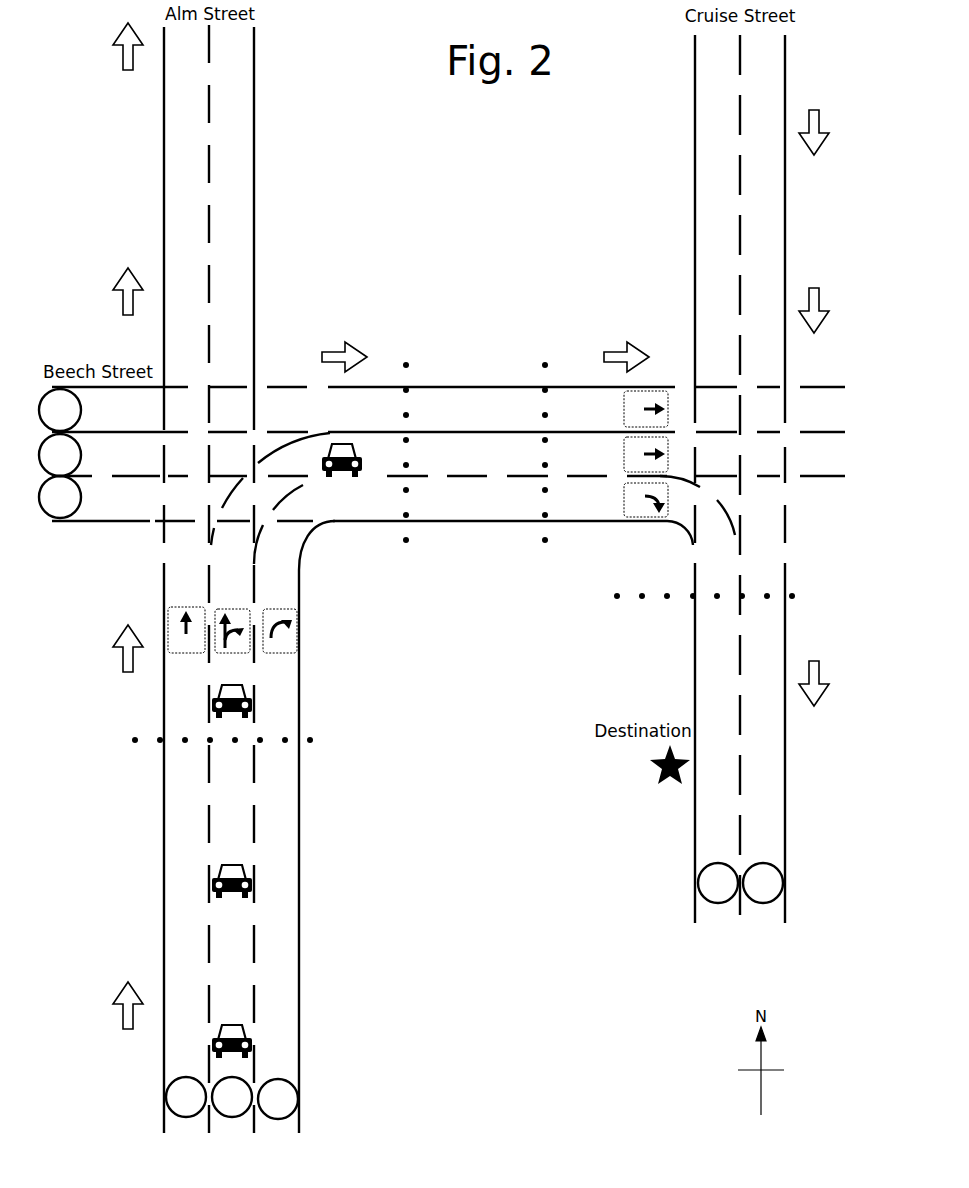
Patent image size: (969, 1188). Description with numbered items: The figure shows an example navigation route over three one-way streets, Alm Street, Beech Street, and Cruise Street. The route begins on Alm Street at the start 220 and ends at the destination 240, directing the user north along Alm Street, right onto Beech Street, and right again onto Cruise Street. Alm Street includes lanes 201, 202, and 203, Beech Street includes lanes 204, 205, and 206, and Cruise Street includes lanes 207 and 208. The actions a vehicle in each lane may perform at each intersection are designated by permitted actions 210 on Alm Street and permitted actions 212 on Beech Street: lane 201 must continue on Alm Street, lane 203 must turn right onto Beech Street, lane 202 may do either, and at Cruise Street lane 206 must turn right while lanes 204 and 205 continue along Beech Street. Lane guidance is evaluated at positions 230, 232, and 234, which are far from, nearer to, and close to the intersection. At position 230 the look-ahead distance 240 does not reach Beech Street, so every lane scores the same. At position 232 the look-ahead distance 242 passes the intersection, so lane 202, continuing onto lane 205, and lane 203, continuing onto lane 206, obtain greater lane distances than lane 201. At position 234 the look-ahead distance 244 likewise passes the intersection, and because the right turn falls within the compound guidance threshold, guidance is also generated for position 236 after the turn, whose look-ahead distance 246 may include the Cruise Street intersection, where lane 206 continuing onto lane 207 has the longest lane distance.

The lane 201 is at (186, 1097).
The lane 202 is at (232, 1097).
The lane 203 is at (278, 1099).
The lane 204 is at (60, 410).
The lane 205 is at (60, 455).
The lane 206 is at (60, 497).
The lane 207 is at (718, 883).
The lane 208 is at (763, 883).
The permitted actions 210 is at (313, 633).
The permitted actions 212 is at (620, 502).
The start 220 is at (272, 1125).
The position 230 is at (255, 1037).
The position 232 is at (263, 865).
The position 234 is at (263, 697).
The position 236 is at (362, 472).
The destination 240 is at (638, 770).
The look-ahead distance 242 is at (406, 439).
The look-ahead distance 244 is at (545, 438).
The look-ahead distance 246 is at (687, 596).